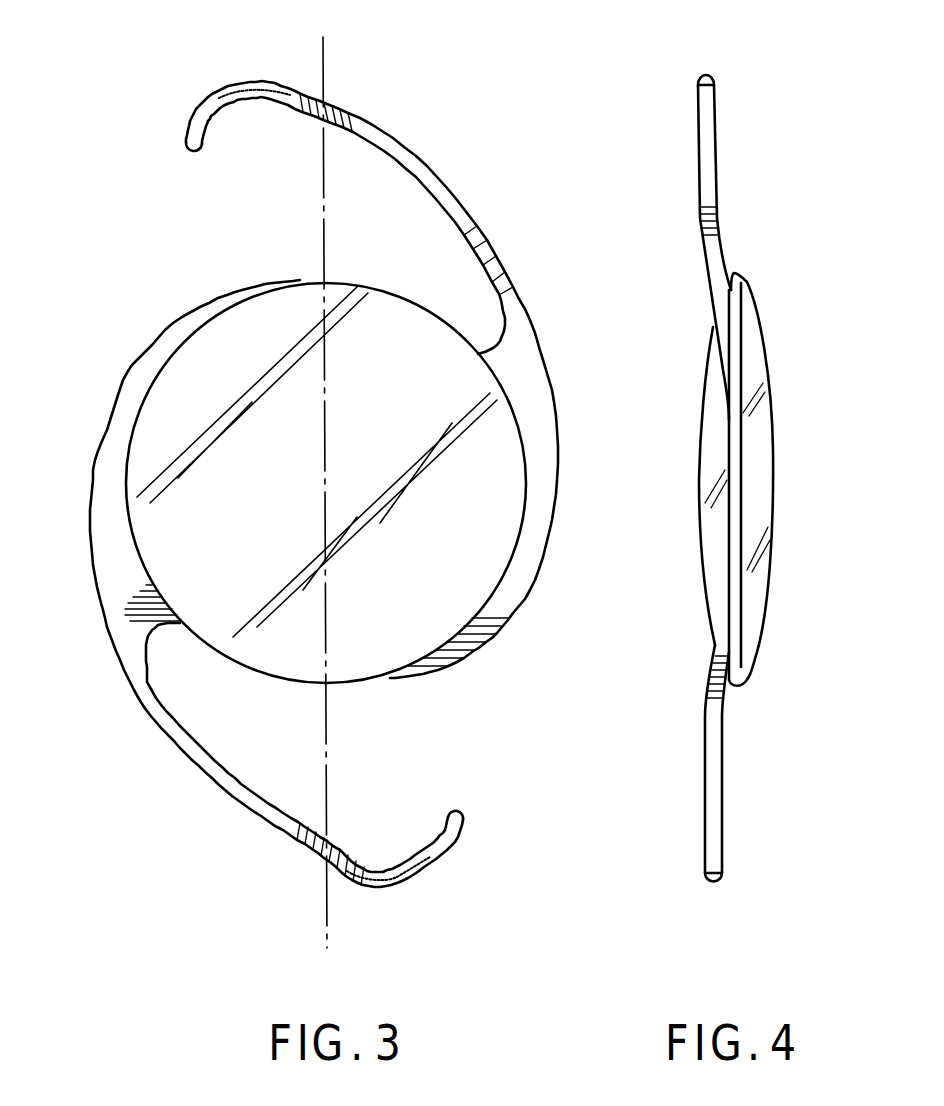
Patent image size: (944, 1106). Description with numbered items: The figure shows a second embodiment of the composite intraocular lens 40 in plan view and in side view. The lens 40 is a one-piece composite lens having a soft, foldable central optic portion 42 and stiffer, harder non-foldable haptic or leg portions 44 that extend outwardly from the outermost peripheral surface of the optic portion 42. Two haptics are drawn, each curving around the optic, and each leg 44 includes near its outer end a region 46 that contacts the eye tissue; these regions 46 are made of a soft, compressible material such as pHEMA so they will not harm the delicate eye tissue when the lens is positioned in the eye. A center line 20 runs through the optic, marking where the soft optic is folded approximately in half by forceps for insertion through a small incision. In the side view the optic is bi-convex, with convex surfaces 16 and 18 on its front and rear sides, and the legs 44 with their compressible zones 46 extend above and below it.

In FIG. 4, the convex surface 16 is at (702, 428).
In FIG. 4, the convex surface 18 is at (773, 473).
In FIG. 3, the center line 20 is at (326, 80).
In FIG. 3, the intraocular lens 40 is at (125, 308).
In FIG. 3, the optic portion 42 is at (401, 645).
In FIG. 3, the haptic or leg portions 44 is at (540, 345).
In FIG. 4, the haptic or leg portions 44 is at (717, 157).
In FIG. 3, the compressible regions 46 is at (250, 82).
In FIG. 4, the compressible regions 46 is at (712, 72).